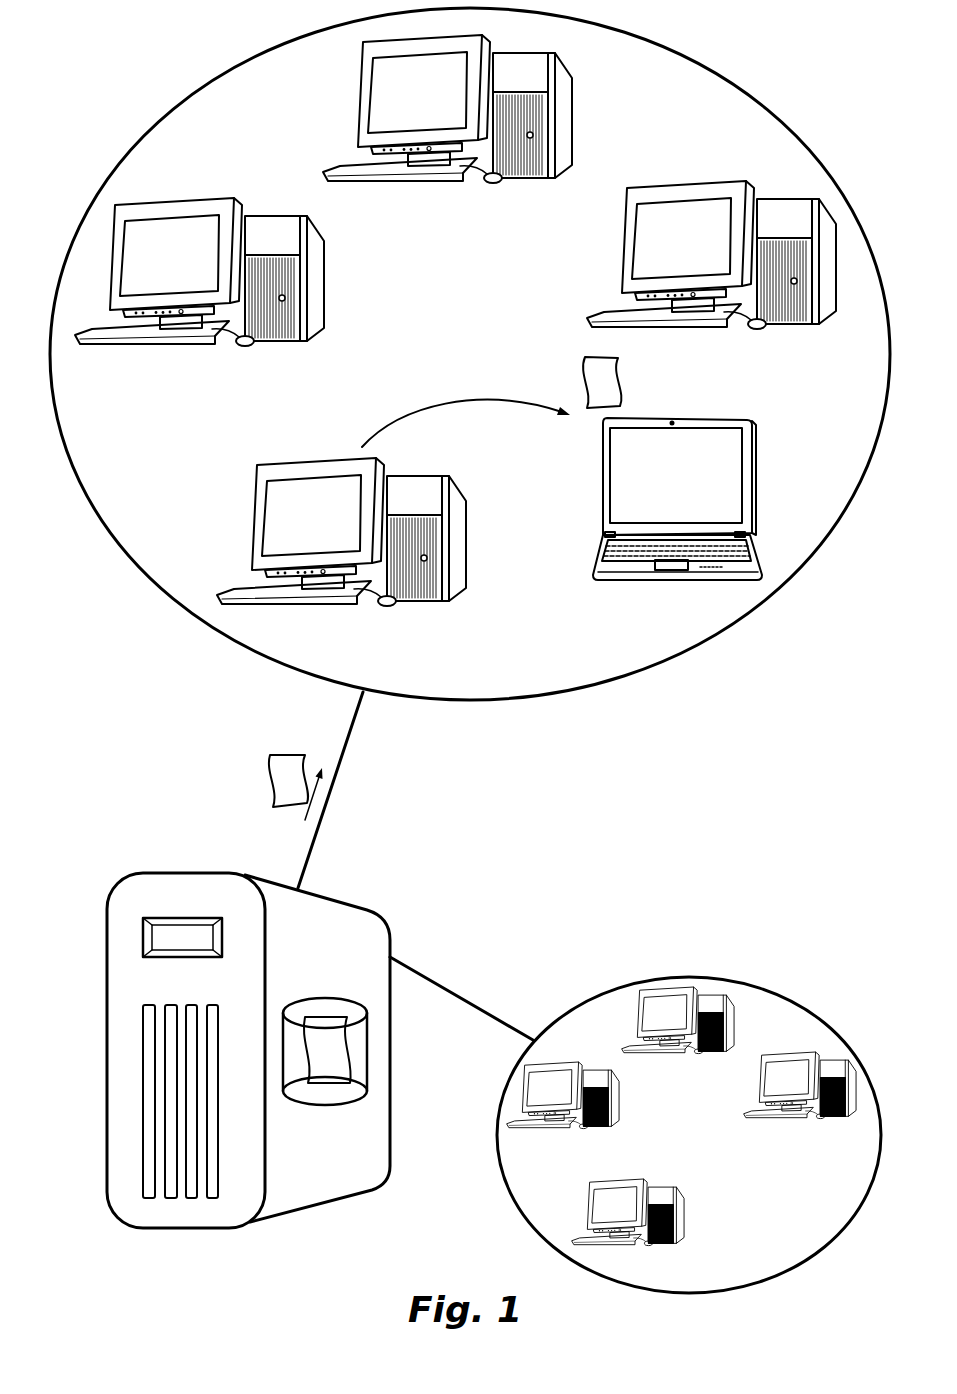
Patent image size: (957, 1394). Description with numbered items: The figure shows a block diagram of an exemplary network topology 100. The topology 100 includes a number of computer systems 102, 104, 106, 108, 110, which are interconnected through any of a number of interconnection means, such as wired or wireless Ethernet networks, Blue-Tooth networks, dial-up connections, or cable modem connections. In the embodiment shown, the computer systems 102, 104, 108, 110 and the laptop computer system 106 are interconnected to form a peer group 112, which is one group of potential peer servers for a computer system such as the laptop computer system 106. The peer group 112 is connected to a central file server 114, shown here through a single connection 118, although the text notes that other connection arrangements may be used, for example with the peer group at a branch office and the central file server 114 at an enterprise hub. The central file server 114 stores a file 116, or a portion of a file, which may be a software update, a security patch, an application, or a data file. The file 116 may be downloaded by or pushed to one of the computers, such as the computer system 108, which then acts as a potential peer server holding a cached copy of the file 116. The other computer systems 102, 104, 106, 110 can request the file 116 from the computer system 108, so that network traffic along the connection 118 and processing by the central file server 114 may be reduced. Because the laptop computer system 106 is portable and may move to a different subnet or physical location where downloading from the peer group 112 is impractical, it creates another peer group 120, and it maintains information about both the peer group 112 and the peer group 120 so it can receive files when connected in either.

The topology 100 is at (134, 52).
The computer system 102 is at (572, 118).
The computer system 104 is at (622, 240).
The laptop computer system 106 is at (753, 462).
The computer system 108 is at (253, 517).
The computer system 110 is at (323, 282).
The peer group 112 is at (648, 665).
The central file server 114 is at (357, 903).
The file 116 is at (583, 370).
The connection 118 is at (350, 740).
The peer group 120 is at (690, 973).